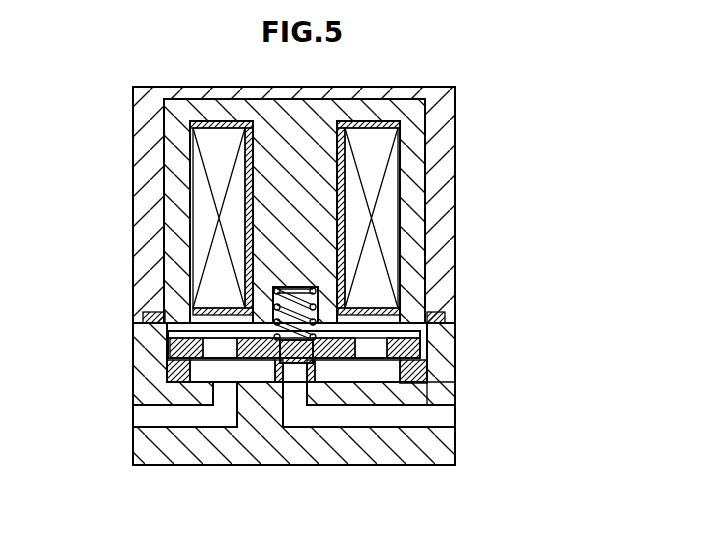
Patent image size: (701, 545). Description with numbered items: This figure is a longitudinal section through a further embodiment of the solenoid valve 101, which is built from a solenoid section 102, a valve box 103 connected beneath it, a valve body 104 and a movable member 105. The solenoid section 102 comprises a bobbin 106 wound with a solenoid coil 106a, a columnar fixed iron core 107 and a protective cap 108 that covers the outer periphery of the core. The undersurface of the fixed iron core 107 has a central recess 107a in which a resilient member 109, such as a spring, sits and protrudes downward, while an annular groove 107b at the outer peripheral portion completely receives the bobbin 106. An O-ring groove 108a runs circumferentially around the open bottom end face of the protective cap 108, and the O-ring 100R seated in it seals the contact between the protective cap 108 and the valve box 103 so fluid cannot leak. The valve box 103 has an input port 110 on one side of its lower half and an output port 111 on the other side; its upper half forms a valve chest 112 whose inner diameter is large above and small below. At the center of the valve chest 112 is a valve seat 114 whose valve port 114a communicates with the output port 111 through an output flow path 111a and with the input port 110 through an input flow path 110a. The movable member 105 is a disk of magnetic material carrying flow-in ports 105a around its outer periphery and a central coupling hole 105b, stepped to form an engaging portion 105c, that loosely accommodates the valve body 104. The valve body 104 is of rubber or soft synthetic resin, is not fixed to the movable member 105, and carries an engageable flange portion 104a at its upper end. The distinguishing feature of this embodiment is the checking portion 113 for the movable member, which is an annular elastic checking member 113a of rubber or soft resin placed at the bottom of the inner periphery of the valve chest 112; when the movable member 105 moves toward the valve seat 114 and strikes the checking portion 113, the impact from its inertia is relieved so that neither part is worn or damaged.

The solenoid valve 101 is at (471, 106).
The solenoid section 102 is at (410, 166).
The valve box 103 is at (157, 448).
The valve body 104 is at (290, 370).
The engageable flange portion 104a is at (270, 365).
The movable member 105 is at (420, 348).
The flow-in ports 105a is at (172, 372).
The coupling hole 105b is at (443, 417).
The engaging portion 105c is at (413, 440).
The bobbin 106 is at (203, 240).
The solenoid coil 106a is at (207, 200).
The fixed iron core 107 is at (193, 108).
The recess 107a is at (345, 320).
The annular groove 107b is at (373, 320).
The protective cap 108 is at (143, 138).
The O-ring groove 108a is at (180, 333).
The resilient member 109 is at (310, 288).
The input port 110 is at (145, 414).
The input flow path 110a is at (183, 415).
The output port 111 is at (458, 420).
The output flow path 111a is at (340, 418).
The valve chest 112 is at (217, 350).
The checking portion 113 is at (420, 370).
The checking member 113a is at (457, 396).
The valve seat 114 is at (373, 398).
The valve port 114a is at (297, 370).
The ring spacer 100R is at (153, 313).